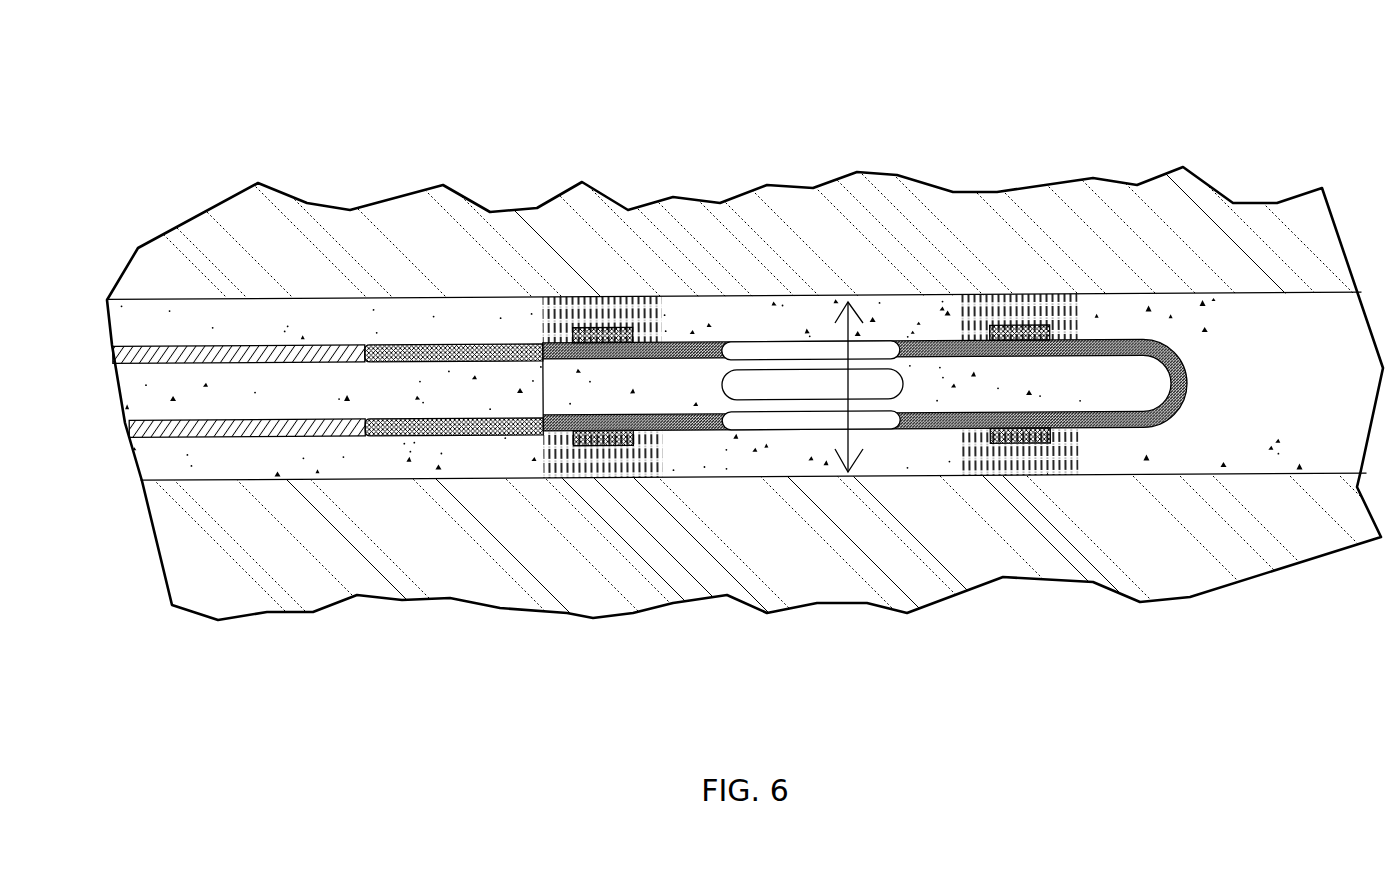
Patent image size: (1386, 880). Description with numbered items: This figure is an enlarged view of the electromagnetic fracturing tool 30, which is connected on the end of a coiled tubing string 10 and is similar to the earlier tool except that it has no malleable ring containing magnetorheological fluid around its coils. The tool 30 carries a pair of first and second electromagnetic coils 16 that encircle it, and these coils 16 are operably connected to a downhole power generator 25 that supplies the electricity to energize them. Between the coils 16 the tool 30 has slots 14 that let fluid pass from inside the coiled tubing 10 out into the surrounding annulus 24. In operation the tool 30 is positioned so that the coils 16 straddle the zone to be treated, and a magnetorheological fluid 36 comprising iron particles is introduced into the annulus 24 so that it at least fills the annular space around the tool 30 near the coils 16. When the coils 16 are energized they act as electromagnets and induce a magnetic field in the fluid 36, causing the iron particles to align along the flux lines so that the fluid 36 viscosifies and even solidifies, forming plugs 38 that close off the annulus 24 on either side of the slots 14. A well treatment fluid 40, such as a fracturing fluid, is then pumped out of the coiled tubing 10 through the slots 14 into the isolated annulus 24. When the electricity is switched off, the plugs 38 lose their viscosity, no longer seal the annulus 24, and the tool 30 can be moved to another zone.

The coiled tubing string 10 is at (323, 343).
The slots 14 is at (800, 343).
The first and second electromagnetic coils 16 is at (625, 325).
The annulus 24 is at (495, 316).
The downhole power generator 25 is at (485, 436).
The electromagnetic fracturing tool 30 is at (916, 321).
The magnetorheological fluid 36 is at (478, 334).
The plugs 38 is at (572, 297).
The well treatment fluid 40 is at (688, 298).